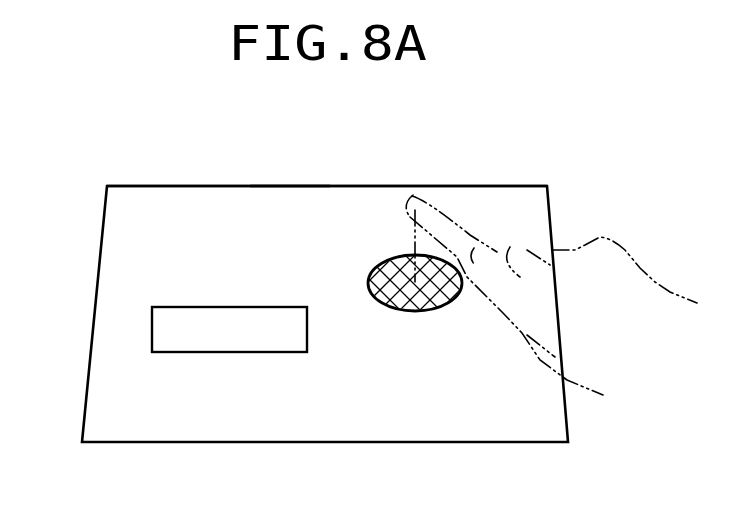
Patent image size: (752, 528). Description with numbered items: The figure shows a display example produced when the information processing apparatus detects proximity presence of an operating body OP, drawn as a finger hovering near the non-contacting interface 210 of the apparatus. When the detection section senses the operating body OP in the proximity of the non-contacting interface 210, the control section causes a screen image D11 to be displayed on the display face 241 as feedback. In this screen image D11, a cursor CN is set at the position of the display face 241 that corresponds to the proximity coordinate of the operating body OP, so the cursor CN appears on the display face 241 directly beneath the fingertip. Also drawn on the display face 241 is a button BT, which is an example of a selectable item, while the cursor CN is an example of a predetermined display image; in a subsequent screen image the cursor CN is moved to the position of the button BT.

The screen image D11 is at (205, 230).
The display face 241 is at (287, 203).
The non-contacting interface 210 is at (358, 205).
The operating body OP is at (455, 222).
The button BT is at (152, 331).
The cursor CN is at (418, 312).